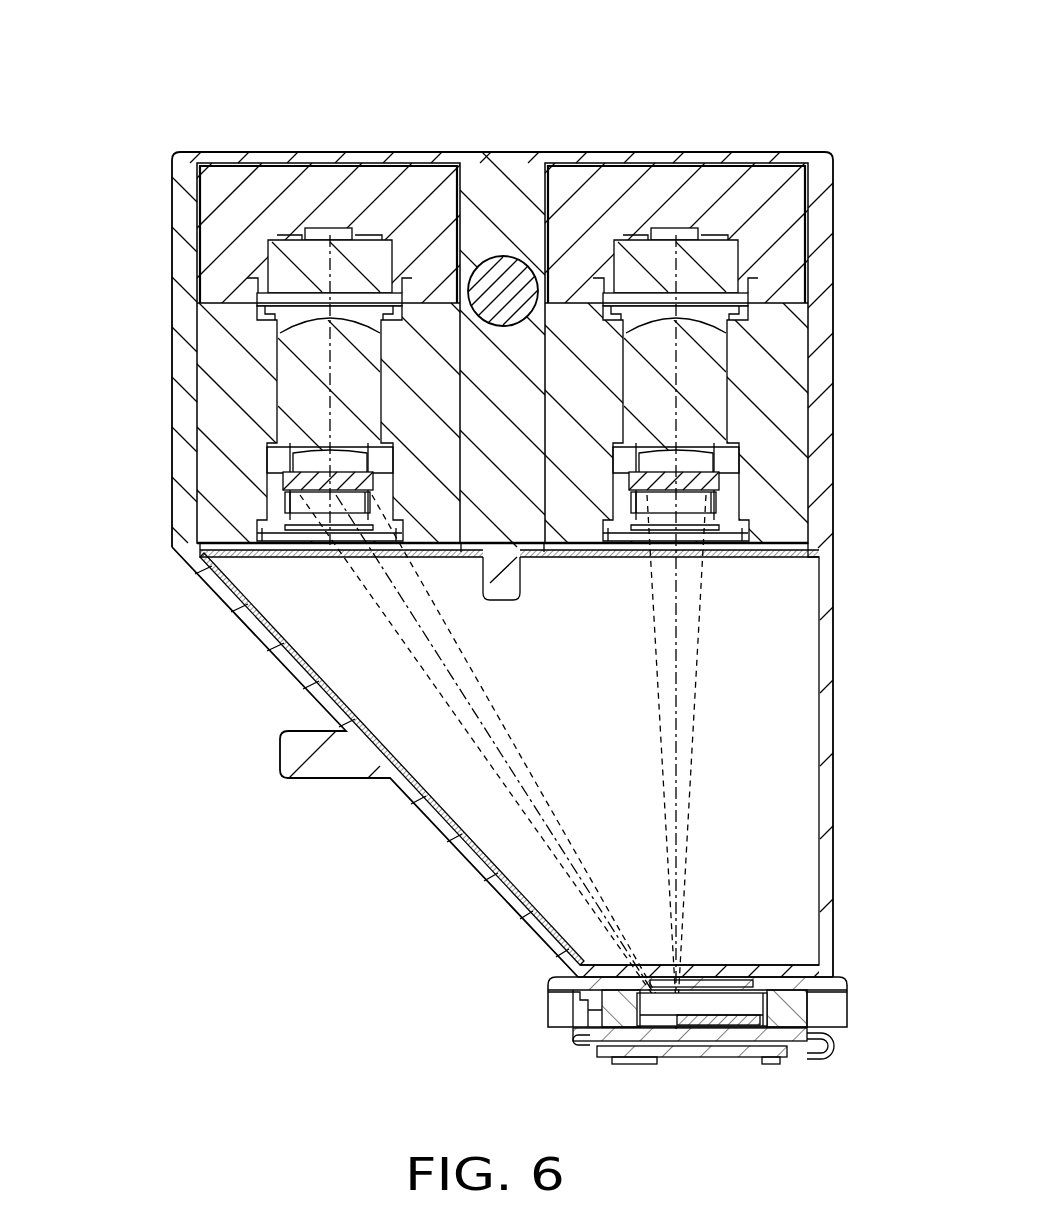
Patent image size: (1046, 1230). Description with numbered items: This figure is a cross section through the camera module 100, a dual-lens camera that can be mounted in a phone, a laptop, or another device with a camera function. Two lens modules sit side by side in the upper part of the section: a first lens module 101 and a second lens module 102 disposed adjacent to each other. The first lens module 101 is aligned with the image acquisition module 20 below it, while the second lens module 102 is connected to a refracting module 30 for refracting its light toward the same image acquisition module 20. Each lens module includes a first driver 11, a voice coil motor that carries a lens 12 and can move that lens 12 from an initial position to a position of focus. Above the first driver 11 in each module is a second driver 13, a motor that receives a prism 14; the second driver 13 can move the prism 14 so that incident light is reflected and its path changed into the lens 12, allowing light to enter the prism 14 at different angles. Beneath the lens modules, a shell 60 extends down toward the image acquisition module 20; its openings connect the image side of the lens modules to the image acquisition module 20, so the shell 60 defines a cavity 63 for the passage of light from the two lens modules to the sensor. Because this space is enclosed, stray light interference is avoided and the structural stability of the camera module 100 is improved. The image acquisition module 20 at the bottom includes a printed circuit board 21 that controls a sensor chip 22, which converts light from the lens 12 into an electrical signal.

The camera module 100 is at (539, 61).
The first lens module 101 is at (902, 182).
The second lens module 102 is at (103, 182).
The first driver 11 is at (225, 368).
The lens 12 is at (305, 434).
The second driver 13 is at (222, 199).
The prism 14 is at (276, 270).
The refracting module 30 is at (378, 450).
The shell 60 is at (235, 605).
The cavity 63 is at (308, 658).
The image acquisition module 20 is at (647, 1036).
The printed circuit board 21 is at (705, 1050).
The sensor chip 22 is at (647, 1003).